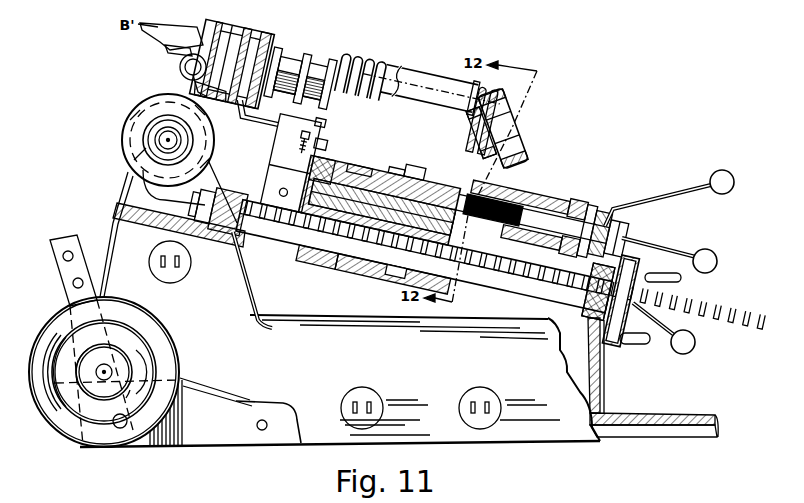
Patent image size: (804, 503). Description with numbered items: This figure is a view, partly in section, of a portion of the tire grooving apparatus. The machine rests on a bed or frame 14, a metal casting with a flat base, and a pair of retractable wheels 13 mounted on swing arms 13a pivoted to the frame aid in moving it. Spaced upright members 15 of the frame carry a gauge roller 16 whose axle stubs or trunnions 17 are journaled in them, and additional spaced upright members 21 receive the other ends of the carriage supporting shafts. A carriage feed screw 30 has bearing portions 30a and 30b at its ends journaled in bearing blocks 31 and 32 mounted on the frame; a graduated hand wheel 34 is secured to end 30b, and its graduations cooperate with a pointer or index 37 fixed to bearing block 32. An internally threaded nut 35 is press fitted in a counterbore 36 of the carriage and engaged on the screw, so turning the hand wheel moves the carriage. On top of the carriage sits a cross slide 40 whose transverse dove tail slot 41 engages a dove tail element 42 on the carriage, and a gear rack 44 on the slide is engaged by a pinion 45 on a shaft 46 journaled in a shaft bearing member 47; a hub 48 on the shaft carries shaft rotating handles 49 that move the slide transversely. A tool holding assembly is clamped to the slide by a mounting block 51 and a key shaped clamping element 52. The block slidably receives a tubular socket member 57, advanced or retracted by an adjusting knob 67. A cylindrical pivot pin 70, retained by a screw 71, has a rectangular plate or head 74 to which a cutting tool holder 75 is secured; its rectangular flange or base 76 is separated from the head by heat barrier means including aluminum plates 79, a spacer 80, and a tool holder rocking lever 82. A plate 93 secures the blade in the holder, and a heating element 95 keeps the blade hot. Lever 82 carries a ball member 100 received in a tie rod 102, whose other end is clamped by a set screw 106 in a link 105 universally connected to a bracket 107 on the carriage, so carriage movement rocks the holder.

The retractable wheels 13 is at (158, 336).
The swing arms 13a is at (58, 292).
The frame 14 is at (452, 432).
The upright members 15 is at (126, 190).
The gauge roller 16 is at (131, 124).
The axle stubs or trunnions 17 is at (147, 185).
The additional spaced upright members 21 is at (588, 292).
The carriage feed screw 30 is at (497, 278).
The bearing portion 30a is at (232, 246).
The bearing portion 30b is at (533, 225).
The bearing block 31 is at (244, 244).
The bearing block 32 is at (639, 377).
The graduated hand wheel 34 is at (618, 346).
The internally threaded nut 35 is at (340, 258).
The counterbore 36 is at (408, 265).
The pointer or index 37 is at (626, 243).
The cross slide 40 is at (446, 180).
The transverse dove tail slot 41 is at (350, 166).
The dove tail element 42 is at (392, 162).
The gear rack 44 is at (490, 197).
The pinion 45 is at (506, 193).
The shaft 46 is at (582, 208).
The shaft bearing member 47 is at (565, 199).
The hub 48 is at (605, 206).
The shaft rotating handles 49 is at (696, 190).
The mounting block 51 is at (396, 66).
The key shaped clamping element 52 is at (389, 148).
The tubular socket member 57 is at (330, 50).
The adjusting knob 67 is at (516, 118).
The cylindrical pivot pin 70 is at (284, 42).
The screw 71 is at (291, 47).
The rectangular plate or head 74 is at (262, 40).
The cutting tool holder 75 is at (160, 30).
The rectangular flange or base 76 is at (205, 36).
The aluminum plates 79 is at (236, 40).
The spacer 80 is at (208, 93).
The tool holder rocking lever 82 is at (242, 121).
The plate 93 is at (166, 47).
The heating element 95 is at (185, 68).
The ball member 100 is at (270, 165).
The tie rod 102 is at (321, 168).
The link 105 is at (290, 132).
The set screw 106 is at (313, 108).
The bracket 107 is at (315, 135).